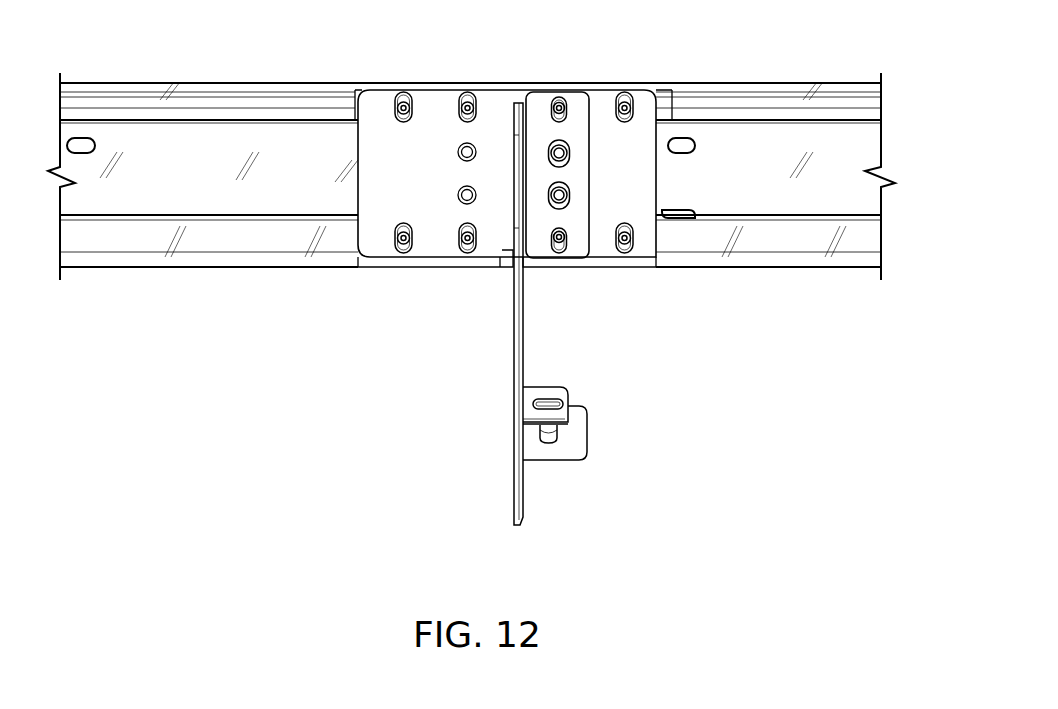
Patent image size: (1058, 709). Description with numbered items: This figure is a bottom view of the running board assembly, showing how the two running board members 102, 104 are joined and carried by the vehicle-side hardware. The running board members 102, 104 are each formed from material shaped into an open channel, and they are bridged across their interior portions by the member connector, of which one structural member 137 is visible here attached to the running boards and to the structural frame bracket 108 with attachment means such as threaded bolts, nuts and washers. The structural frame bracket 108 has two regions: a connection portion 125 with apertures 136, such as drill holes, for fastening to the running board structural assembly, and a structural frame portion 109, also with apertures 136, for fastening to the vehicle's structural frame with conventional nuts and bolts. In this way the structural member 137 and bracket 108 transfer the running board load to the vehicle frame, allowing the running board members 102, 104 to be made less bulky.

The running board member 102 is at (863, 143).
The running board member 104 is at (245, 138).
The structural frame bracket 108 is at (523, 351).
The structural frame portion 109 is at (575, 440).
The connection portion 125 is at (575, 108).
The apertures 136 is at (476, 102).
The structural member 137 is at (378, 105).